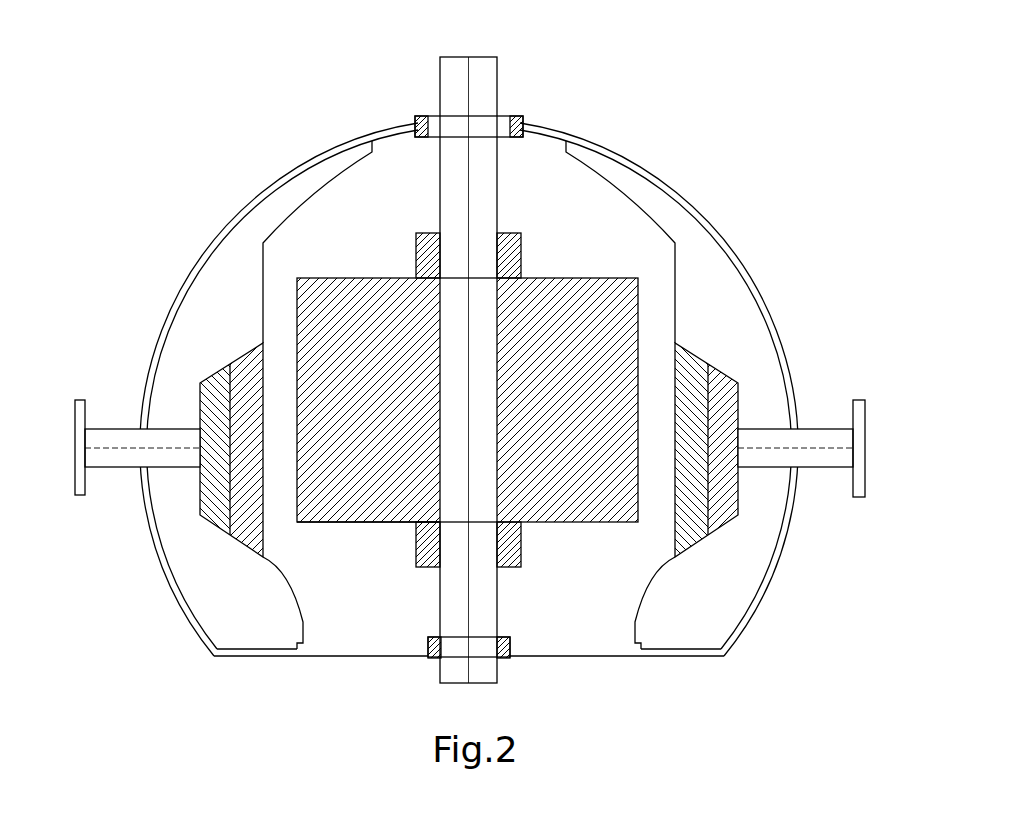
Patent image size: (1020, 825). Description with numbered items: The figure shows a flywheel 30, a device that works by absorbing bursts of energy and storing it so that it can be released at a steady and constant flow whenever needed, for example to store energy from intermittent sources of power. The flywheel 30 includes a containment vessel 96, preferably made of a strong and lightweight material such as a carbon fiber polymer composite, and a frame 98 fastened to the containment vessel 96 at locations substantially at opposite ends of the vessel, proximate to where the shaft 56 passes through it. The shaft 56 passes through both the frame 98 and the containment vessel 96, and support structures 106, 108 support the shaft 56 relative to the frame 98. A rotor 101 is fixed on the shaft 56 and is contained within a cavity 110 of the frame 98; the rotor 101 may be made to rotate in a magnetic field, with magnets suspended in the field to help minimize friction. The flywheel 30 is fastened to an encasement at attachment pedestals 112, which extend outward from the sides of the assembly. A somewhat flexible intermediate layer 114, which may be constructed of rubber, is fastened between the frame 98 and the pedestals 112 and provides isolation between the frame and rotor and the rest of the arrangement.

The flywheel 30 is at (701, 106).
The shaft 56 is at (453, 102).
The containment vessel 96 is at (762, 600).
The frame 98 is at (635, 587).
The rotor 101 is at (638, 278).
The support structure 106 is at (414, 243).
The support structure 108 is at (520, 560).
The cavity 110 is at (330, 520).
The attachment pedestal 112 is at (137, 448).
The intermediate layer 114 is at (695, 540).